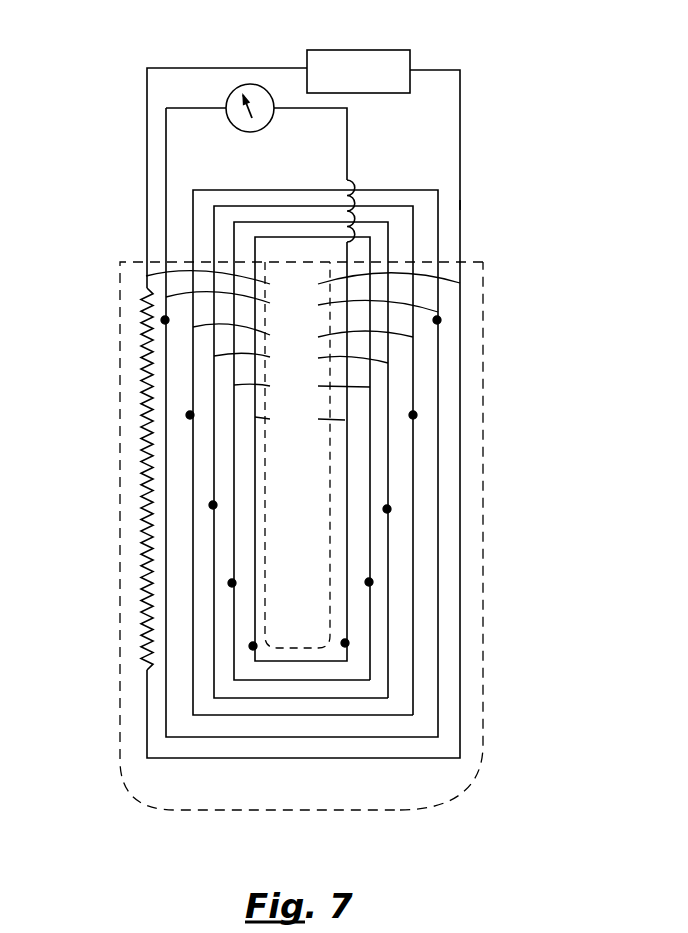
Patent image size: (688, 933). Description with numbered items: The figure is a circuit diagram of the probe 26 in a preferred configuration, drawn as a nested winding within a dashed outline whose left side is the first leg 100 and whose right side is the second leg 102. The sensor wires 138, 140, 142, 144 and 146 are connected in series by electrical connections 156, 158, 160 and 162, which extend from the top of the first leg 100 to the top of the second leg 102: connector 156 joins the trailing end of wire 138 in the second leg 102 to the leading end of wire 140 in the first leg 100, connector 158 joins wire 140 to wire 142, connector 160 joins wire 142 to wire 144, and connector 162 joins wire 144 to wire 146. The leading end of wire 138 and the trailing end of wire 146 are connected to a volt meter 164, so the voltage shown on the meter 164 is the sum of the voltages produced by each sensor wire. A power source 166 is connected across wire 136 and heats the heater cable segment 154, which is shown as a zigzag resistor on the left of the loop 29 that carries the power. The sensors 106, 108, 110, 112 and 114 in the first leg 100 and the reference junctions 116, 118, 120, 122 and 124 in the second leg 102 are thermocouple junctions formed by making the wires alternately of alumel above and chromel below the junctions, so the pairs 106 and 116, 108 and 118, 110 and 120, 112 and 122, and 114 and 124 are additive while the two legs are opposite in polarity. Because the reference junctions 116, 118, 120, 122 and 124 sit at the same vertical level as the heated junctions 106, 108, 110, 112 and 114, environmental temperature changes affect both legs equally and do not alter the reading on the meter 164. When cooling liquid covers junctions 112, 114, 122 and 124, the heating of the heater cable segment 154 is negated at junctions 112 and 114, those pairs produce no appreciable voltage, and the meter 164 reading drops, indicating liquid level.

The probe 26 is at (469, 205).
The power circuit 29 is at (278, 60).
The first leg 100 is at (118, 263).
The second leg 102 is at (473, 260).
The thermocouple junction 106 is at (165, 320).
The thermocouple junction 108 is at (190, 415).
The thermocouple junction 110 is at (213, 505).
The thermocouple junction 112 is at (232, 583).
The thermocouple junction 114 is at (253, 646).
The reference junction 116 is at (437, 320).
The reference junction 118 is at (413, 415).
The reference junction 120 is at (387, 509).
The reference junction 122 is at (369, 582).
The reference junction 124 is at (345, 643).
The wire 136 is at (303, 284).
The sensor wire 138 is at (302, 306).
The sensor wire 140 is at (303, 335).
The sensor wire 142 is at (301, 358).
The sensor wire 144 is at (302, 385).
The sensor wire 146 is at (300, 415).
The heater cable segment 154 is at (147, 362).
The electrical connection 156 is at (217, 188).
The electrical connection 158 is at (275, 206).
The electrical connection 160 is at (288, 220).
The electrical connection 162 is at (305, 237).
The volt meter 164 is at (228, 93).
The power source 166 is at (390, 48).